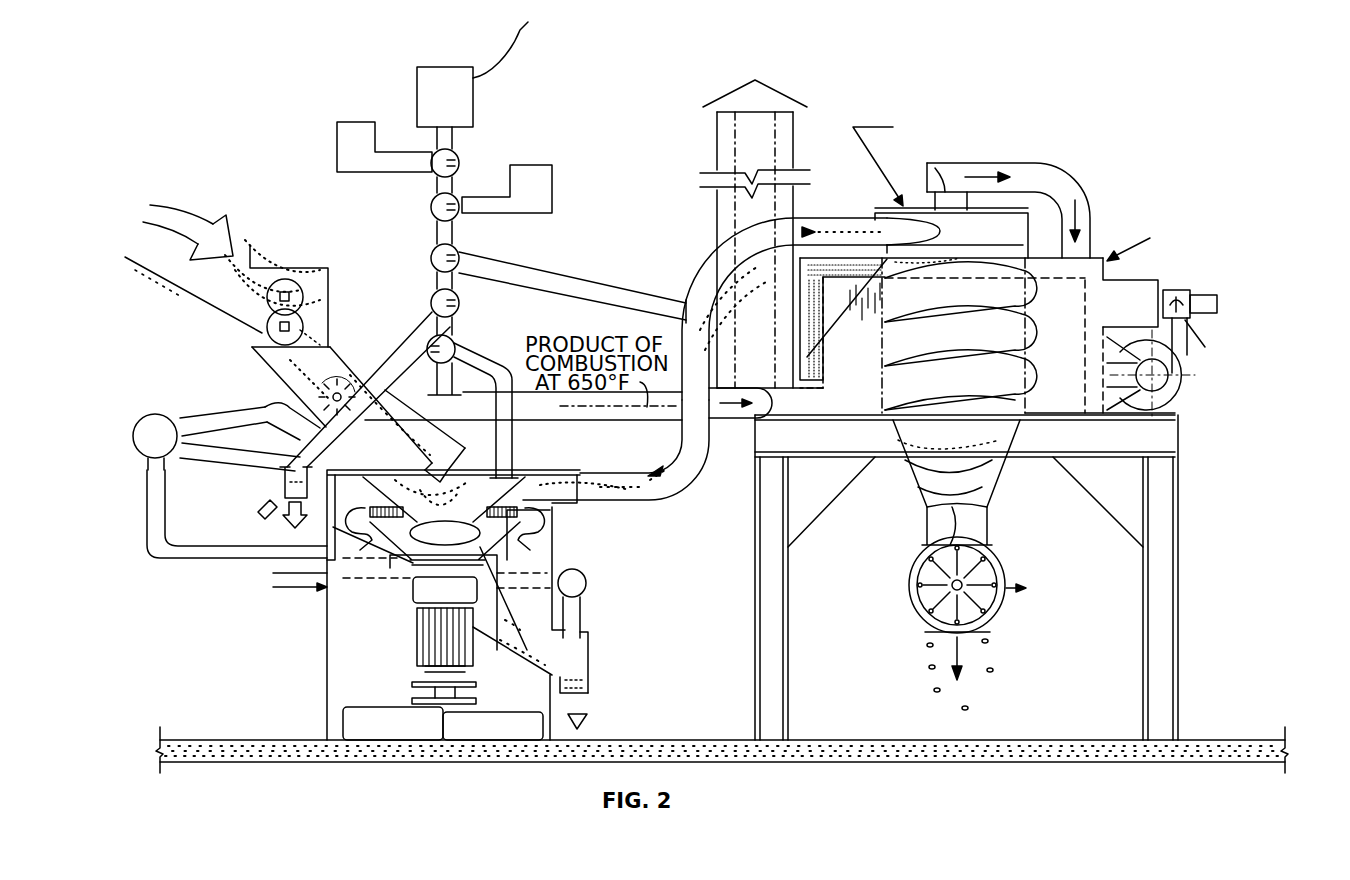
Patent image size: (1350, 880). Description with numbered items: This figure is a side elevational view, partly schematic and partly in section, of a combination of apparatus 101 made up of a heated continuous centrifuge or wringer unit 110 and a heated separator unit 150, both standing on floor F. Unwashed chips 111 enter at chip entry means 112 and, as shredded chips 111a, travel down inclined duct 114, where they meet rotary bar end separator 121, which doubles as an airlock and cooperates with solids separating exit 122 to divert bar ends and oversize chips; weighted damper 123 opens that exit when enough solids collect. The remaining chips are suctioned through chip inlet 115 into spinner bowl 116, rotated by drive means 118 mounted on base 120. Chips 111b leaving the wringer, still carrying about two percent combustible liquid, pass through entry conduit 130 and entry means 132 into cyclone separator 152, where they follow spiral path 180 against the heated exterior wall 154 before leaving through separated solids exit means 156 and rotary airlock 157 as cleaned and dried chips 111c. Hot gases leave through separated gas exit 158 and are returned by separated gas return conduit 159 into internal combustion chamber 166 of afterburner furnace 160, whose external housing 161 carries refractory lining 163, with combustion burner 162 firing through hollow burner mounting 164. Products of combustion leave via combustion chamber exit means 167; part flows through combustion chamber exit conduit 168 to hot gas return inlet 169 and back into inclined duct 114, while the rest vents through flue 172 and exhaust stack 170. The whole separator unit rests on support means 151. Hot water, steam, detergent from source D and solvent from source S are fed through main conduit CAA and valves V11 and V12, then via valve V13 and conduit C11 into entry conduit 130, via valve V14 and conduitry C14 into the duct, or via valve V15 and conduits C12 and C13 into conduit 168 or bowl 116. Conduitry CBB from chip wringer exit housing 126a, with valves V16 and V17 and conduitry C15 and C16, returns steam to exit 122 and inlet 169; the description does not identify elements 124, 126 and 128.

The combination of apparatus 101 is at (249, 99).
The heated continuous centrifuge or wringer unit 110 is at (293, 667).
The unwashed chips 111 is at (232, 238).
The shredded chips 111a is at (330, 347).
The chips leaving centrifuge 111b is at (670, 490).
The cleaned and dried chips 111c is at (928, 650).
The chip entry means 112 is at (253, 335).
The inclined duct 114 is at (293, 378).
The chip inlet 115 is at (440, 478).
The spinner bowl 116 is at (463, 504).
The drive means 118 is at (417, 643).
The base 120 is at (502, 737).
The rotary bar end separator 121 is at (403, 425).
The solids separating exit 122 is at (283, 478).
The weighted damper 123 is at (260, 512).
The liquid chamber 124 is at (555, 662).
The liquid outlet 126 is at (592, 700).
The chip wringer exit housing 126a is at (590, 681).
The centrifuge housing 128 is at (578, 500).
The entry conduit 130 is at (682, 290).
The entry means 132 is at (925, 242).
The heated separator unit 150 is at (1216, 102).
The support means 151 is at (1180, 553).
The cyclone separator 152 is at (882, 208).
The cyclone separator exterior wall 154 is at (983, 382).
The separated solids exit means 156 is at (988, 524).
The rotary airlock 157 is at (907, 582).
The separated gas exit 158 is at (929, 174).
The separated gas return conduit 159 is at (1062, 185).
The afterburner furnace 160 is at (1108, 270).
The external housing 161 is at (1073, 300).
The combustion burner 162 is at (1170, 388).
The refractory lining 163 is at (829, 338).
The hollow burner mounting 164 is at (1147, 317).
The internal combustion chamber 166 is at (836, 294).
The combustion chamber exit means 167 is at (757, 422).
The combustion chamber exit conduit 168 is at (615, 414).
The hot gas return inlet 169 is at (265, 407).
The exhaust stack 170 is at (717, 222).
The flue 172 is at (775, 161).
The spiral path 180 is at (882, 351).
The conduit C11 is at (538, 280).
The conduit C12 is at (512, 452).
The conduit C13 is at (436, 378).
The conduitry C14 is at (408, 315).
The conduitry C15 is at (197, 459).
The conduitry C16 is at (192, 413).
The valve V11 is at (460, 160).
The valve V12 is at (432, 207).
The valve V13 is at (463, 238).
The valve V14 is at (460, 305).
The valve V15 is at (455, 345).
The valve V16 is at (586, 580).
The valve V17 is at (133, 436).
The main conduit CAA is at (455, 136).
The conduitry CBB is at (147, 522).
The detergent source D is at (384, 147).
The solvent source S is at (507, 189).
The floor F is at (1200, 740).